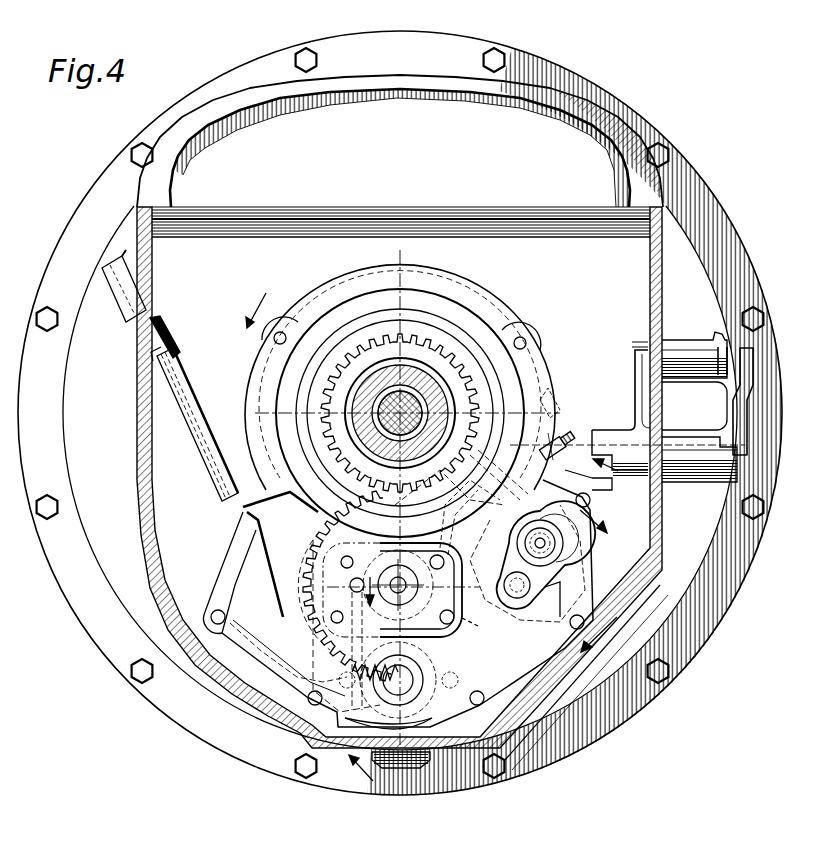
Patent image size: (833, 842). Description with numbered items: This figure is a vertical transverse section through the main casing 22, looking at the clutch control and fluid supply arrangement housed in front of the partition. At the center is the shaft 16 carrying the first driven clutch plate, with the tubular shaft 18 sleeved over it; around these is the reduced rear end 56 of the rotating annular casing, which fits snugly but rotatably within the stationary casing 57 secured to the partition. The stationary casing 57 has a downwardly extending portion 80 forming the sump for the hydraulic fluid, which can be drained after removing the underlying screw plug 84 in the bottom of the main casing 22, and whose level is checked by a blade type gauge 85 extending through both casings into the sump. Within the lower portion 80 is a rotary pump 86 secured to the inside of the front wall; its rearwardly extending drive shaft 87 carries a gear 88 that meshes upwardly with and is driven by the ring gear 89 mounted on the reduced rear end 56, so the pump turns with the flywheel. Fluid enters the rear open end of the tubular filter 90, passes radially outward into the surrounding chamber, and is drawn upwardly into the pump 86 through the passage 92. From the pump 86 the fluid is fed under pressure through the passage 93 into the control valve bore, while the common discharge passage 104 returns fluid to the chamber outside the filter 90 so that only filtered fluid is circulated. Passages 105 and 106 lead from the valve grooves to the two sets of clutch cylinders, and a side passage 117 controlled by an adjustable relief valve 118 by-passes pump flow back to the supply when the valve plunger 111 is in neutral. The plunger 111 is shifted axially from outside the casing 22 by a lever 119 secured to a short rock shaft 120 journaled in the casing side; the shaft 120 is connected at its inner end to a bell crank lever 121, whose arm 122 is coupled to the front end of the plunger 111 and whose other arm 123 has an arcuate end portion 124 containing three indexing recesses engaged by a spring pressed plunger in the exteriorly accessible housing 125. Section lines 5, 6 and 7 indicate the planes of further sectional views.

The section line 5- 5 is at (430, 474).
The section line 6- 6 is at (491, 558).
The section line 7- 7 is at (482, 615).
The shaft 16 is at (400, 413).
The shaft 18 is at (402, 410).
The casing 22 is at (137, 505).
The rear end of the casing 56 is at (340, 403).
The stationary casing 57 is at (317, 292).
The downwardly extending portion of the casing 80 is at (260, 661).
The screw plug 84 is at (393, 770).
The blade type gauge 85 is at (213, 472).
The rotary pump 86 is at (455, 603).
The drive shaft 87 is at (452, 603).
The gear 88 is at (317, 542).
The ring gear 89 is at (317, 437).
The tubular filter 90 is at (350, 665).
The passage 92 is at (320, 640).
The passage 93 is at (440, 548).
The discharge passage 104 is at (478, 626).
The passage 105 is at (540, 398).
The passage 106 is at (398, 506).
The valve plunger 111 is at (542, 543).
The side passage 117 is at (525, 493).
The adjustable relief valve 118 is at (563, 440).
The lever 119 is at (752, 367).
The rock shaft 120 is at (658, 487).
The bell crank lever 121 is at (607, 430).
The arm 122 is at (600, 487).
The arm 123 is at (642, 409).
The arcuate end portion 124 is at (634, 349).
The housing 125 is at (682, 342).